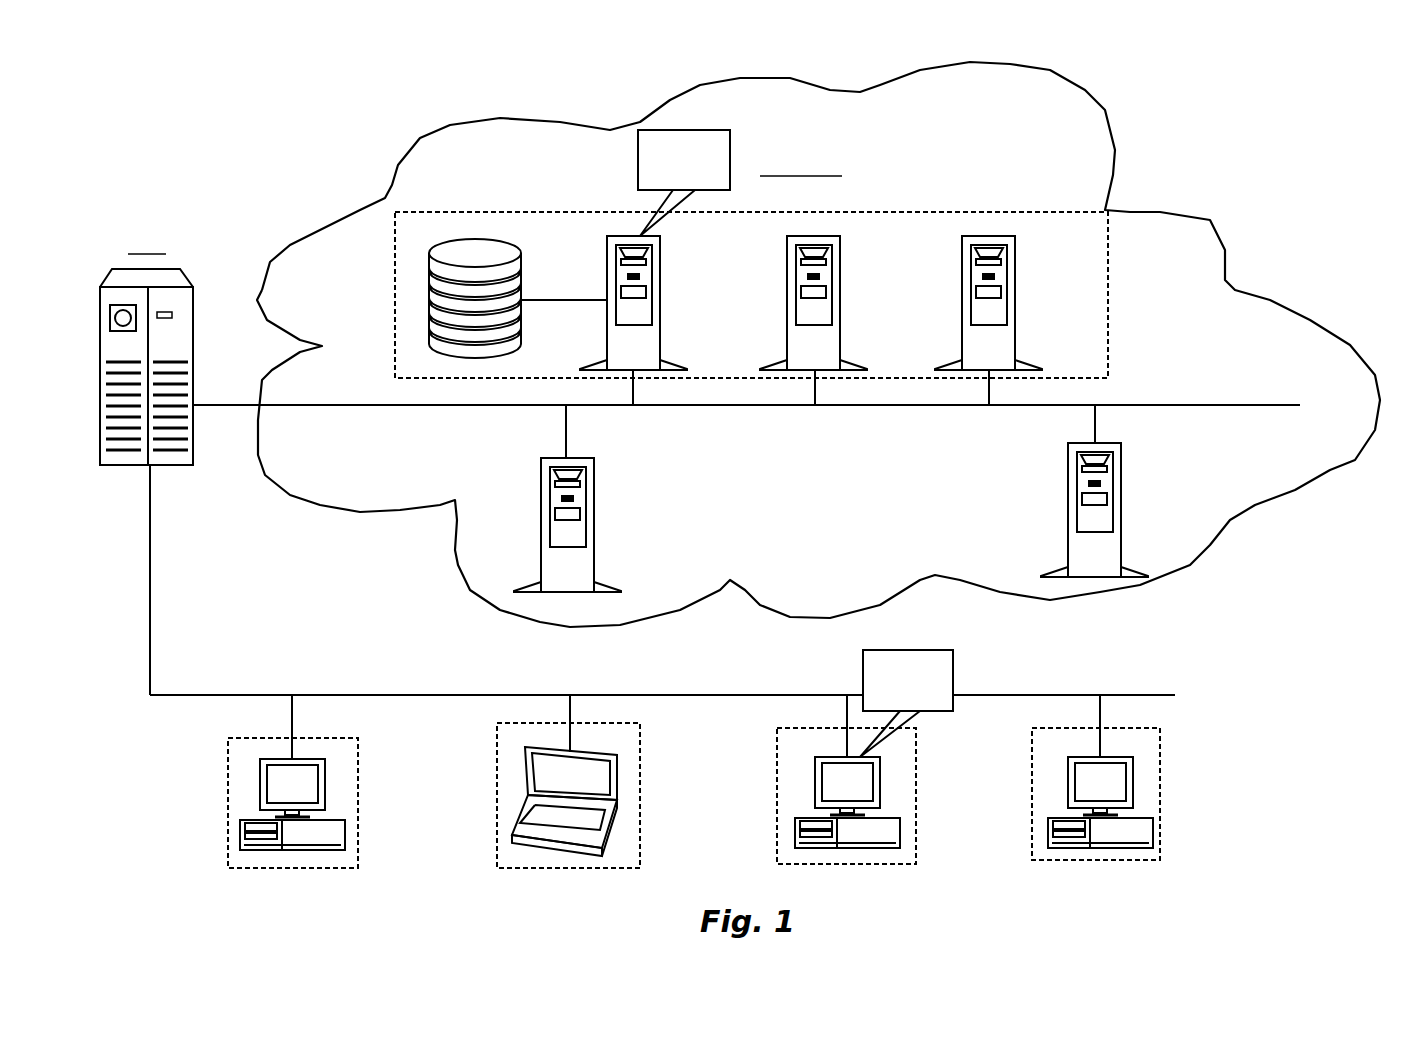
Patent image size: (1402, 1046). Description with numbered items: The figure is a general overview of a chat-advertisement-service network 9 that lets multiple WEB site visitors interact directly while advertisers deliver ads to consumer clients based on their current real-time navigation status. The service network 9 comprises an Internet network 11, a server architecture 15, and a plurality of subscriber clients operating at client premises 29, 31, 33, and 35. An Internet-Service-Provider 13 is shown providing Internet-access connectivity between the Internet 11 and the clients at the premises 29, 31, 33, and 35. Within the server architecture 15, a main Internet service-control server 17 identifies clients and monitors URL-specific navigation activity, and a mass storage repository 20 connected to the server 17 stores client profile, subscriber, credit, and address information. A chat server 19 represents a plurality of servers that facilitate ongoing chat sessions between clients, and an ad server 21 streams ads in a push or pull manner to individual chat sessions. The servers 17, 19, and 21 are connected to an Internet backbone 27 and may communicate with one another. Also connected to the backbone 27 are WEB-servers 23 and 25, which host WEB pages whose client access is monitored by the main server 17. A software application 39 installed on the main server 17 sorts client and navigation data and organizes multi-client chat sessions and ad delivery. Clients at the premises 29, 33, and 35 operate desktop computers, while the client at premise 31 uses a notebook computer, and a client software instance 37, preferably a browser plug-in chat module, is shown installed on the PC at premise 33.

The chat-advertisement-service network 9 is at (1210, 590).
The Internet network 11 is at (358, 192).
The Internet-Service-Provider 13 is at (176, 482).
The server architecture 15 is at (885, 212).
The main Internet service-control server 17 is at (660, 323).
The chat server 19 is at (840, 318).
The mass storage repository 20 is at (521, 283).
The ad server 21 is at (1013, 318).
The WEB-server 23 is at (594, 530).
The WEB-server 25 is at (1121, 518).
The Internet backbone 27 is at (1127, 405).
The client premises 29 is at (228, 822).
The client premises 31 is at (497, 823).
The client premises 33 is at (777, 822).
The client premises 35 is at (1032, 810).
The client software instance 37 is at (953, 671).
The software application 39 is at (730, 148).